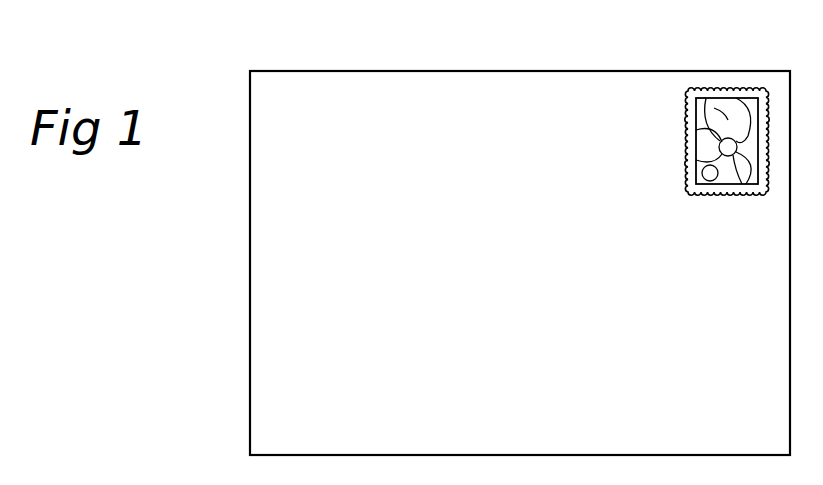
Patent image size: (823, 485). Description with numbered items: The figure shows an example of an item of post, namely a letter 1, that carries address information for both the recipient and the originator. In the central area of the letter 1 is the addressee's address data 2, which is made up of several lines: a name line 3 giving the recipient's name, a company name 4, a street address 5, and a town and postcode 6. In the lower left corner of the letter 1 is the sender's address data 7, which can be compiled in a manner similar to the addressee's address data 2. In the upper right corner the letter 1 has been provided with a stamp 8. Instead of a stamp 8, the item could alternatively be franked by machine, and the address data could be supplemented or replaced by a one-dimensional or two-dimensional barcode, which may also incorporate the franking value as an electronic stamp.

The letter 1 is at (234, 201).
The addressee's address data 2 is at (445, 223).
The name line 3 is at (394, 222).
The company name 4 is at (400, 244).
The street address 5 is at (400, 268).
The town and postcode 6 is at (401, 292).
The sender's address data 7 is at (243, 418).
The stamp 8 is at (728, 108).